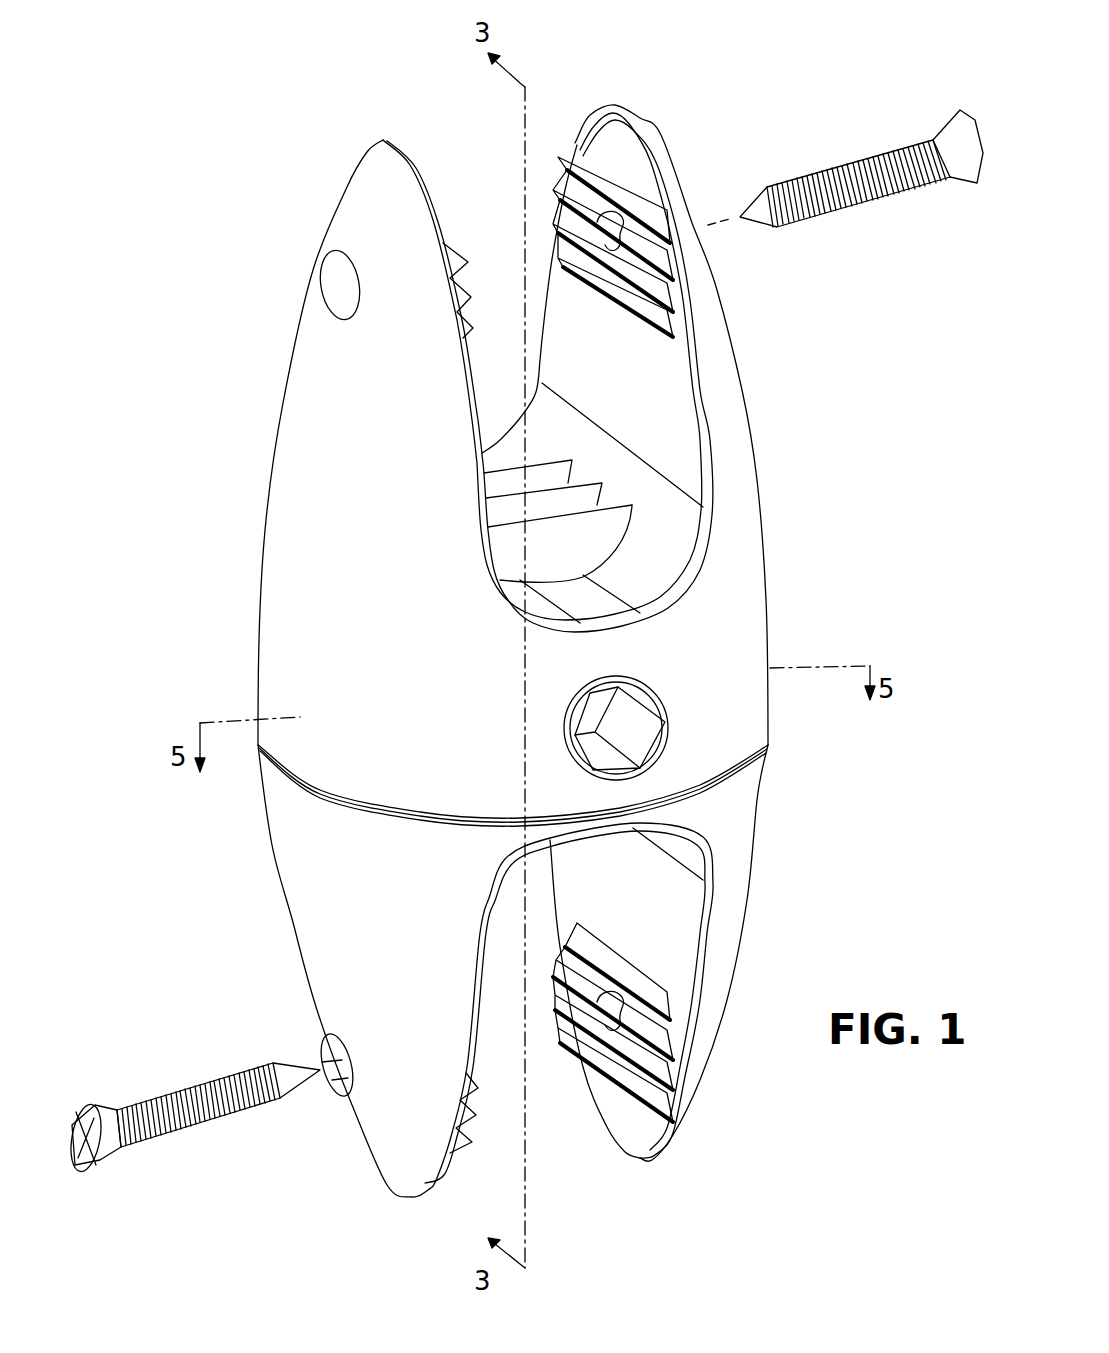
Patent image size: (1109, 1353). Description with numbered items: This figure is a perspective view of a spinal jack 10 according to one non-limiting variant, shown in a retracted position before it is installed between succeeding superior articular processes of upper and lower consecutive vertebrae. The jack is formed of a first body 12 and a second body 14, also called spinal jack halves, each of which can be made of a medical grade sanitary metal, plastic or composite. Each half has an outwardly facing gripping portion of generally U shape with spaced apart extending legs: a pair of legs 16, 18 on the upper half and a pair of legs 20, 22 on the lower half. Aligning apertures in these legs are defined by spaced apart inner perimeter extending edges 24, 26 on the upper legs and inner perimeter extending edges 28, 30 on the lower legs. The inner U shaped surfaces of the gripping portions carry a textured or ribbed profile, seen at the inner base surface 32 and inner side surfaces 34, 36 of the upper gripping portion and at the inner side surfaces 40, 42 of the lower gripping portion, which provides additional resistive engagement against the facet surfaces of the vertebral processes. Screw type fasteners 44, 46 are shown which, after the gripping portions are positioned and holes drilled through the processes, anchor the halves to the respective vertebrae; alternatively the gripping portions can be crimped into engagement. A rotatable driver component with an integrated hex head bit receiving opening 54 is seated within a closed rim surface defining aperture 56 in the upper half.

The spinal jack 10 is at (180, 528).
The first body 12 is at (278, 608).
The second body 14 is at (297, 900).
The leg 16 is at (358, 183).
The leg 18 is at (683, 182).
The leg 20 is at (345, 1140).
The leg 22 is at (690, 1098).
The inner perimeter extending edge 24 is at (330, 290).
The inner perimeter extending edge 26 is at (610, 225).
The inner perimeter extending edge 28 is at (333, 1078).
The inner perimeter extending edge 30 is at (633, 1033).
The inner base surface 32 is at (624, 513).
The inner side surface 34 is at (457, 263).
The inner side surface 36 is at (660, 320).
The inner side surface 40 is at (473, 1123).
The inner side surface 42 is at (583, 1013).
The screw type fastener 44 is at (880, 170).
The screw type fastener 46 is at (183, 1135).
The bit receiving opening 54 is at (595, 707).
The closed rim surface defining aperture 56 is at (590, 755).